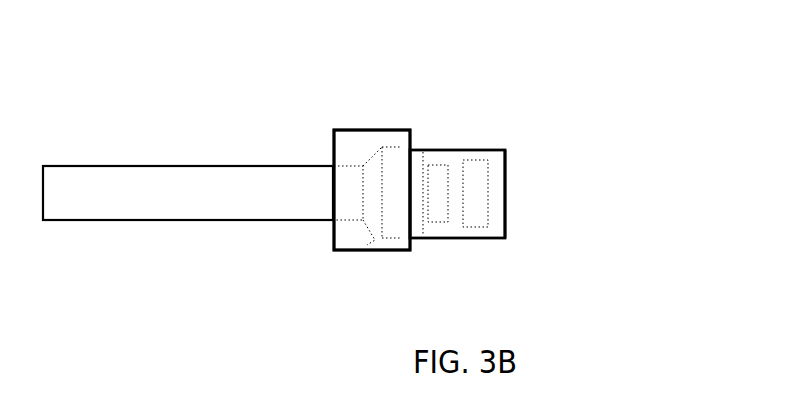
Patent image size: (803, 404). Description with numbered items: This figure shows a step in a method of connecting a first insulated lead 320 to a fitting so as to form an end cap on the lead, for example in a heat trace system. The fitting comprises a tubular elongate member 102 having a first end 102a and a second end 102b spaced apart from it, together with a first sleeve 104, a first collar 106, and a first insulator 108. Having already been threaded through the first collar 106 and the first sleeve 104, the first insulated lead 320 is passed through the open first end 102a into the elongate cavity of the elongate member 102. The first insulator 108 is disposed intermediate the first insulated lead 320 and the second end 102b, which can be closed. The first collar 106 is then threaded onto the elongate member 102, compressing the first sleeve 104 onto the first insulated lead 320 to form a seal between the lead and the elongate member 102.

The first insulated lead 320 is at (213, 193).
The first collar 106 is at (337, 129).
The first end 102a is at (357, 251).
The first sleeve 104 is at (378, 140).
The elongate member 102 is at (500, 150).
The first insulator 108 is at (472, 173).
The second end 102b is at (505, 177).